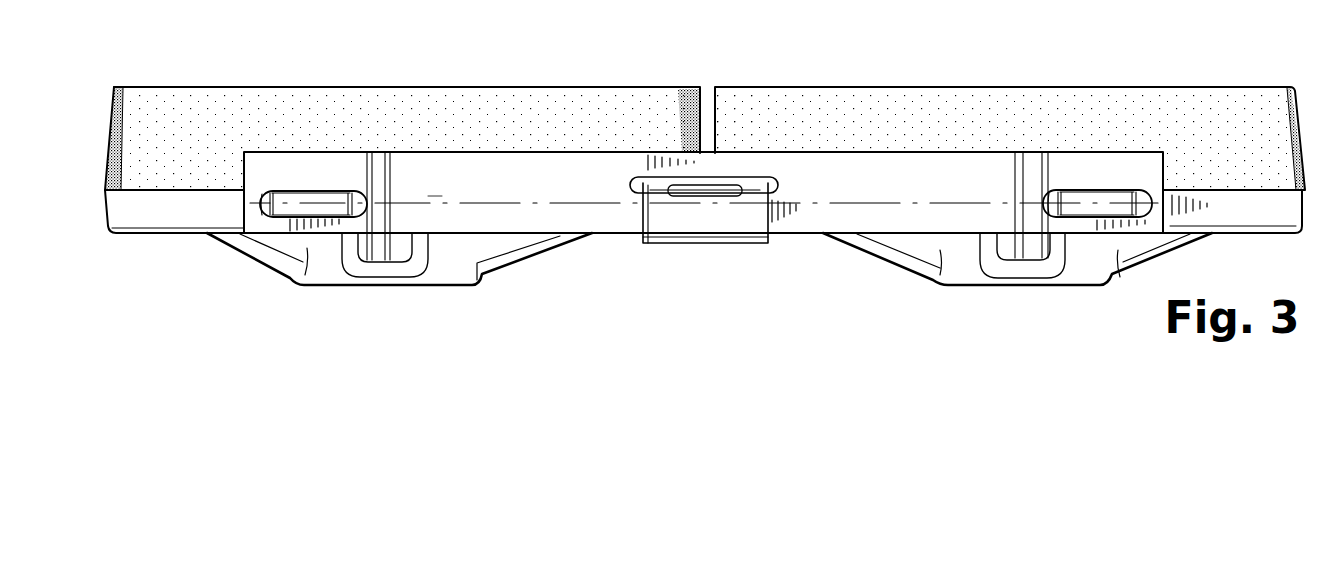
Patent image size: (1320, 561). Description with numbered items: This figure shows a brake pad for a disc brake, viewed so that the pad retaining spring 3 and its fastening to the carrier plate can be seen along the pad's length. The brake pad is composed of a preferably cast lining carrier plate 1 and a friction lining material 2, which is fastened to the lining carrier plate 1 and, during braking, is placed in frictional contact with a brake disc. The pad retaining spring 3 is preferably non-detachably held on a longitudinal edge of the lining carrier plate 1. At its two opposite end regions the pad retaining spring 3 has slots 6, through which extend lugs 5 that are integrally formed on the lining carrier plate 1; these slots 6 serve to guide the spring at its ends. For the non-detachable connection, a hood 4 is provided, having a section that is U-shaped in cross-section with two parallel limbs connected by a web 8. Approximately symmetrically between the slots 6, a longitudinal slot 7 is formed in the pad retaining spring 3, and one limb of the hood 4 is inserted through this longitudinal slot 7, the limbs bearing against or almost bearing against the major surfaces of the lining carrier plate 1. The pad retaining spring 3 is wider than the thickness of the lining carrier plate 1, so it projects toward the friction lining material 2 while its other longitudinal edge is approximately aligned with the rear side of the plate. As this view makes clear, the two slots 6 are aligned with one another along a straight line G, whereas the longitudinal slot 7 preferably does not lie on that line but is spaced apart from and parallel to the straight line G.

The lining carrier plate 1 is at (147, 218).
The friction lining material 2 is at (380, 110).
The pad retaining spring 3 is at (527, 212).
The hood 4 is at (672, 252).
The lugs 5 is at (307, 197).
The slots 6 is at (262, 190).
The longitudinal slot 7 is at (770, 183).
The web 8 is at (752, 222).
The straight line G is at (435, 200).